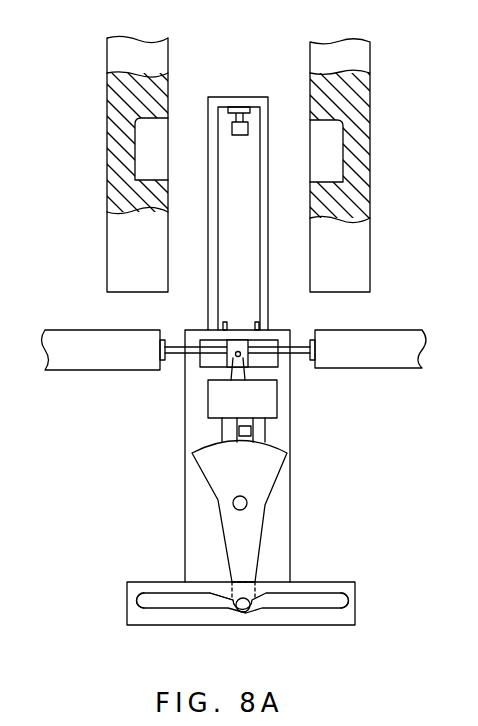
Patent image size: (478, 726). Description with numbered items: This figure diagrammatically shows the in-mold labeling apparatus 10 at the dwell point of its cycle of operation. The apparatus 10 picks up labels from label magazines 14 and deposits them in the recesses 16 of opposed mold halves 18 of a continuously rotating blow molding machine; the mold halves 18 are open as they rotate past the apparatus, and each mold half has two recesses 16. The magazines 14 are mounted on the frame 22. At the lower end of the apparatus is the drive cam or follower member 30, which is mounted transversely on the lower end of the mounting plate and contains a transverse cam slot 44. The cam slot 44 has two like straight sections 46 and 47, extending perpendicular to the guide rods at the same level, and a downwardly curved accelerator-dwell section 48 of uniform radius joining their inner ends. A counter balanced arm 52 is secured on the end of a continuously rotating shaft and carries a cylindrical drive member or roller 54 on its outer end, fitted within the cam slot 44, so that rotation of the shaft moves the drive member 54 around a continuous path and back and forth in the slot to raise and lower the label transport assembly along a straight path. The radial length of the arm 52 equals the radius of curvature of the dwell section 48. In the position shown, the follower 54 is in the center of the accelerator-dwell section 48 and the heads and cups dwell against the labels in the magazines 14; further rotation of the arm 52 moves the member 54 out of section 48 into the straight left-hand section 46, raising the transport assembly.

The in-mold labeling apparatus 10 is at (128, 458).
The label magazines 14 is at (90, 347).
The mold recesses 16 is at (137, 146).
The mold halves 18 is at (310, 55).
The frame 22 is at (233, 97).
The drive cam 30 is at (355, 604).
The cam slot 44 is at (165, 591).
The straight section 46 is at (153, 602).
The straight section 47 is at (317, 602).
The accelerator-dwell section 48 is at (225, 605).
The counter balanced arm 52 is at (263, 535).
The drive member 54 is at (253, 612).